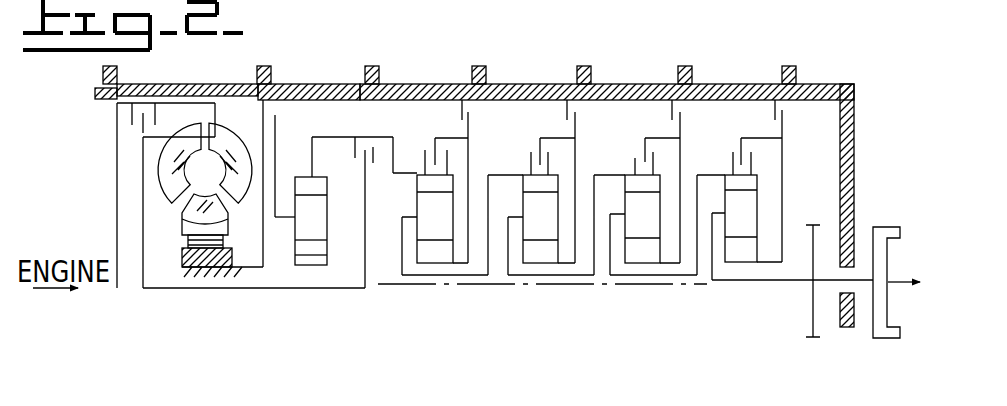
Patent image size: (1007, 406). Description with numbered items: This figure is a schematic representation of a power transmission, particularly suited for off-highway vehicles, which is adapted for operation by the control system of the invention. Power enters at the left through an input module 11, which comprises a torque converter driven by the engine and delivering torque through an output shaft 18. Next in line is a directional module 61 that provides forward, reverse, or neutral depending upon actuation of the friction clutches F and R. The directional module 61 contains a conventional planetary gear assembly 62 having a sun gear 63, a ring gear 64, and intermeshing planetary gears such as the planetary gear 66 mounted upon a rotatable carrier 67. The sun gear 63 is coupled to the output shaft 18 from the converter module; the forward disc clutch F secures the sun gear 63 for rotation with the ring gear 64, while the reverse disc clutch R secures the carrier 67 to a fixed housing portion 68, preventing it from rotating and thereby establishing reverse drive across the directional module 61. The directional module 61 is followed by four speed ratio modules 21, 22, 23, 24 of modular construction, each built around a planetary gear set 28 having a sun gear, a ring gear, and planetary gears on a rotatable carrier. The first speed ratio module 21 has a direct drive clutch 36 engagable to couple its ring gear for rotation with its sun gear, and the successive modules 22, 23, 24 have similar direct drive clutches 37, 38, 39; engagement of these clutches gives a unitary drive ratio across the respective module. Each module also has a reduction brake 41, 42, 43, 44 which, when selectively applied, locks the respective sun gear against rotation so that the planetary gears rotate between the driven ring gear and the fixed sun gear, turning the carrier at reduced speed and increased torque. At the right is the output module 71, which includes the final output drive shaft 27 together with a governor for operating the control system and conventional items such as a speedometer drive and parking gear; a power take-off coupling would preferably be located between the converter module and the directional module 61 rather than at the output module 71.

The input module 11 is at (158, 81).
The output shaft 18 is at (190, 289).
The speed ratio module 21 is at (435, 73).
The speed ratio module 22 is at (548, 76).
The speed ratio module 23 is at (653, 73).
The speed ratio module 24 is at (756, 73).
The final output drive shaft 27 is at (895, 278).
The planetary gear set 28 is at (438, 268).
The direct drive clutch 36 is at (430, 160).
The direct drive clutch 37 is at (535, 150).
The direct drive clutch 38 is at (643, 148).
The direct drive clutch 39 is at (746, 150).
The reduction brake 41 is at (477, 118).
The reduction brake 42 is at (578, 120).
The reduction brake 43 is at (688, 118).
The reduction brake 44 is at (787, 115).
The directional module 61 is at (291, 80).
The planetary gear assembly 62 is at (333, 271).
The sun gear 63 is at (317, 256).
The ring gear 64 is at (336, 168).
The planetary gear 66 is at (308, 207).
The carrier 67 is at (288, 219).
The fixed housing portion 68 is at (309, 72).
The output module 71 is at (839, 84).
The reverse disc clutch R is at (283, 127).
The forward disc clutch F is at (363, 140).